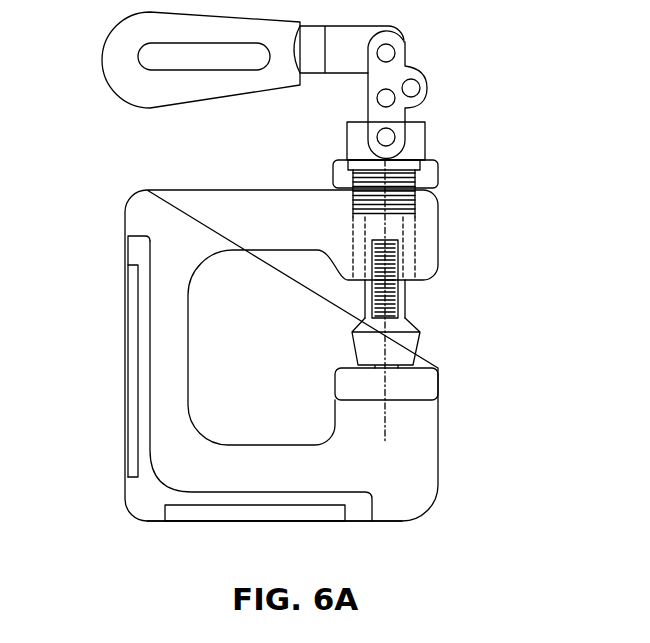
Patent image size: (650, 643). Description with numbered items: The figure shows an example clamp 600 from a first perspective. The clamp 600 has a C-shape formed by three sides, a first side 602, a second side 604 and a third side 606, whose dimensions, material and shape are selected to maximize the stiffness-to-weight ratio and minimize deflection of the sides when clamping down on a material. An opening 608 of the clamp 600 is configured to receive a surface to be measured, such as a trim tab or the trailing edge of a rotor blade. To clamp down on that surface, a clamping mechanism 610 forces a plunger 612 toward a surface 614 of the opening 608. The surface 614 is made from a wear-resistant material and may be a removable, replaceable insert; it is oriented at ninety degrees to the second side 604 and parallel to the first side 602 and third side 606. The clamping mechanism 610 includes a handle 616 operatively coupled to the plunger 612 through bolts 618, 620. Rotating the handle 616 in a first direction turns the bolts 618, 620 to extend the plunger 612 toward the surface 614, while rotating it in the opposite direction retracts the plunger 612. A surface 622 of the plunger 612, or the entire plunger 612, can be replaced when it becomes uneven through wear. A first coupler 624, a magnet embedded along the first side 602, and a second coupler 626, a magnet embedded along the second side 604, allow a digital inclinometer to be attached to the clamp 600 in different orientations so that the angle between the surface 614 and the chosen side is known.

The clamp 600 is at (125, 210).
The first side 602 is at (150, 521).
The second side 604 is at (125, 342).
The third side 606 is at (205, 190).
The opening 608 is at (438, 313).
The clamping mechanism 610 is at (435, 67).
The plunger 612 is at (360, 330).
The surface 614 is at (428, 368).
The handle 616 is at (102, 62).
The bolt 618 is at (415, 197).
The bolt 620 is at (392, 258).
The surface of the plunger 622 is at (363, 368).
The first coupler 624 is at (323, 512).
The second coupler 626 is at (132, 473).